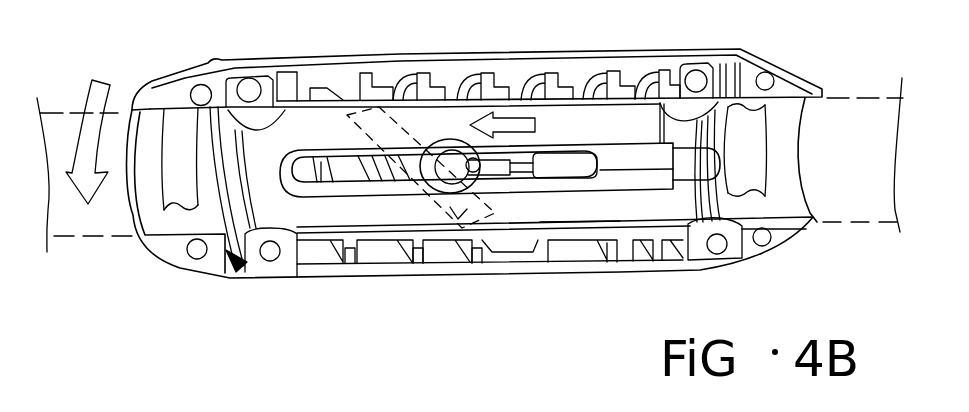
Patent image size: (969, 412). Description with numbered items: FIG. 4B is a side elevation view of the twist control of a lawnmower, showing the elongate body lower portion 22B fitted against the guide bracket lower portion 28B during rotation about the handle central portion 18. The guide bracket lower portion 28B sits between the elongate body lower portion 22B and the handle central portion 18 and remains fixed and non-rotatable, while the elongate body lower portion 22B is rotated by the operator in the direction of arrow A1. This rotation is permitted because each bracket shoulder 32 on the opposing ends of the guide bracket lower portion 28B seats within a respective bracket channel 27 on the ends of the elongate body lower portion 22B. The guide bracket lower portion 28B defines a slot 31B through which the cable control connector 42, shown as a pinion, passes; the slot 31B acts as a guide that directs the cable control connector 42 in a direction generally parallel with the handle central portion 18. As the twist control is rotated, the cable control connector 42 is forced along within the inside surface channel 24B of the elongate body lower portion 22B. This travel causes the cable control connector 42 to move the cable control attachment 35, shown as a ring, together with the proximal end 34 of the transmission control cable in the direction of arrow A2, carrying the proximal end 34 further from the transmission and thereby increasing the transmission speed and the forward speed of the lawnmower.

The handle central portion 18 is at (88, 218).
The bracket channel 27 is at (231, 272).
The bracket shoulder 32 is at (288, 258).
The slot 31B is at (342, 152).
The cable control attachment 35 is at (433, 160).
The cable control connector 42 is at (450, 162).
The proximal end 34 is at (557, 165).
The elongate body lower portion 22B is at (355, 268).
The guide bracket lower portion 28B is at (607, 207).
The inside surface channel 24B is at (470, 232).
The arrow A1 is at (82, 112).
The arrow A2 is at (517, 118).